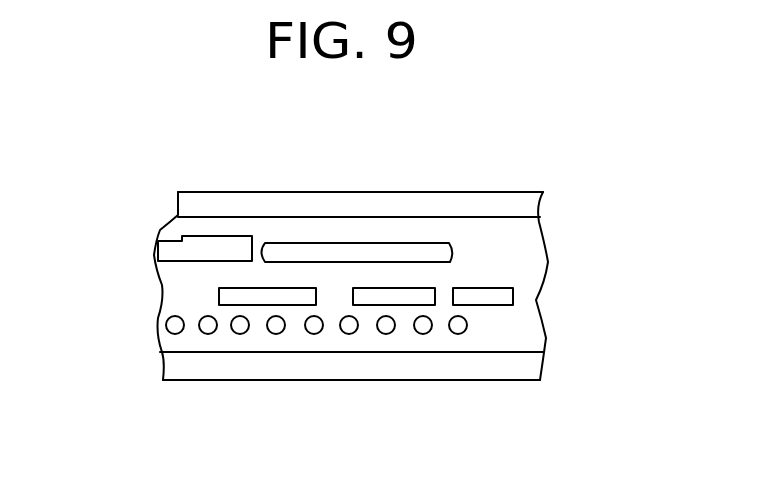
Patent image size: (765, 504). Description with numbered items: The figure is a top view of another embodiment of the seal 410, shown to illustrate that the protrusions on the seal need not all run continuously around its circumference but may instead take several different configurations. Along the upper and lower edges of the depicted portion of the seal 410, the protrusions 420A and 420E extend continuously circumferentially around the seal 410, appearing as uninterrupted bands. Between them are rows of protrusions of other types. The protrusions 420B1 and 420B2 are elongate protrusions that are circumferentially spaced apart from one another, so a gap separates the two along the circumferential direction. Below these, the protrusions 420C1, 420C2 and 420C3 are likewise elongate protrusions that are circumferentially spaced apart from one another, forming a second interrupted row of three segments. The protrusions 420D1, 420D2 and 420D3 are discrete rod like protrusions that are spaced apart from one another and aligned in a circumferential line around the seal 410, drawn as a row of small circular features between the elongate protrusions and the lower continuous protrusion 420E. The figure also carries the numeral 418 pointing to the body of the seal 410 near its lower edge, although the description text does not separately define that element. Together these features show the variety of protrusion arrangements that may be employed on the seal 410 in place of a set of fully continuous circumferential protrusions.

The seal 410 is at (349, 276).
The substrate body 418 is at (504, 339).
The protrusion 420A is at (437, 207).
The elongate protrusion 420B1 is at (206, 250).
The elongate protrusion 420B2 is at (307, 252).
The elongate protrusion 420C1 is at (283, 296).
The elongate protrusion 420C2 is at (417, 297).
The elongate protrusion 420C3 is at (483, 293).
The discrete rod like protrusion 420D1 is at (169, 323).
The discrete rod like protrusion 420D2 is at (206, 321).
The discrete rod like protrusion 420D3 is at (237, 333).
The protrusion 420E is at (395, 367).